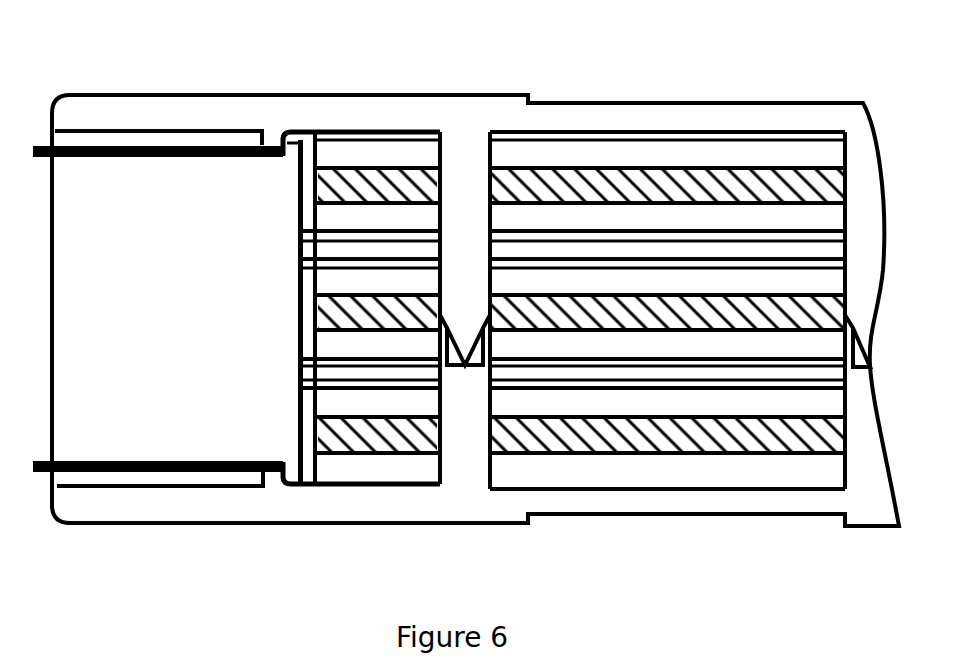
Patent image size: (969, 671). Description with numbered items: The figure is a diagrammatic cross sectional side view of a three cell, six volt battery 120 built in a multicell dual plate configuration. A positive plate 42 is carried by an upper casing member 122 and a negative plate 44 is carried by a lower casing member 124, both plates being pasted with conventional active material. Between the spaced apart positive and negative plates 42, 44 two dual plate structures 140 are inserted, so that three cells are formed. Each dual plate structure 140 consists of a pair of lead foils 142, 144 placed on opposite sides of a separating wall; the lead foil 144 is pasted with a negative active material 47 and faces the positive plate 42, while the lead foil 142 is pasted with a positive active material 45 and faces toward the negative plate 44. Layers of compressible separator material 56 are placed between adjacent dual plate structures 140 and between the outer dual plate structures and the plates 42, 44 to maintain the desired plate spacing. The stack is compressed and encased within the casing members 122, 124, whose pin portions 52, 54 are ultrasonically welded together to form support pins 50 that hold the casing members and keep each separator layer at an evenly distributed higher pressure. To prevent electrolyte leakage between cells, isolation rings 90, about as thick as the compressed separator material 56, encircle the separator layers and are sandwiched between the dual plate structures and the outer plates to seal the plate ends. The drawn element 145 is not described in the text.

The battery 120 is at (610, 80).
The upper casing member 122 is at (783, 122).
The lower casing member 124 is at (768, 495).
The dual plate structure 140 is at (279, 258).
The current collector tabs 145 is at (316, 268).
The isolation ring 90 is at (312, 188).
The positive active material 45 is at (410, 410).
The lead foil 144 is at (345, 390).
The lead foil 142 is at (362, 390).
The pin portion 54 is at (458, 462).
The support pin 50 is at (474, 180).
The pin portion 52 is at (457, 152).
The positive plate 42 is at (551, 128).
The negative plate 44 is at (570, 486).
The compressible separator material 56 is at (657, 347).
The negative active material 47 is at (717, 218).